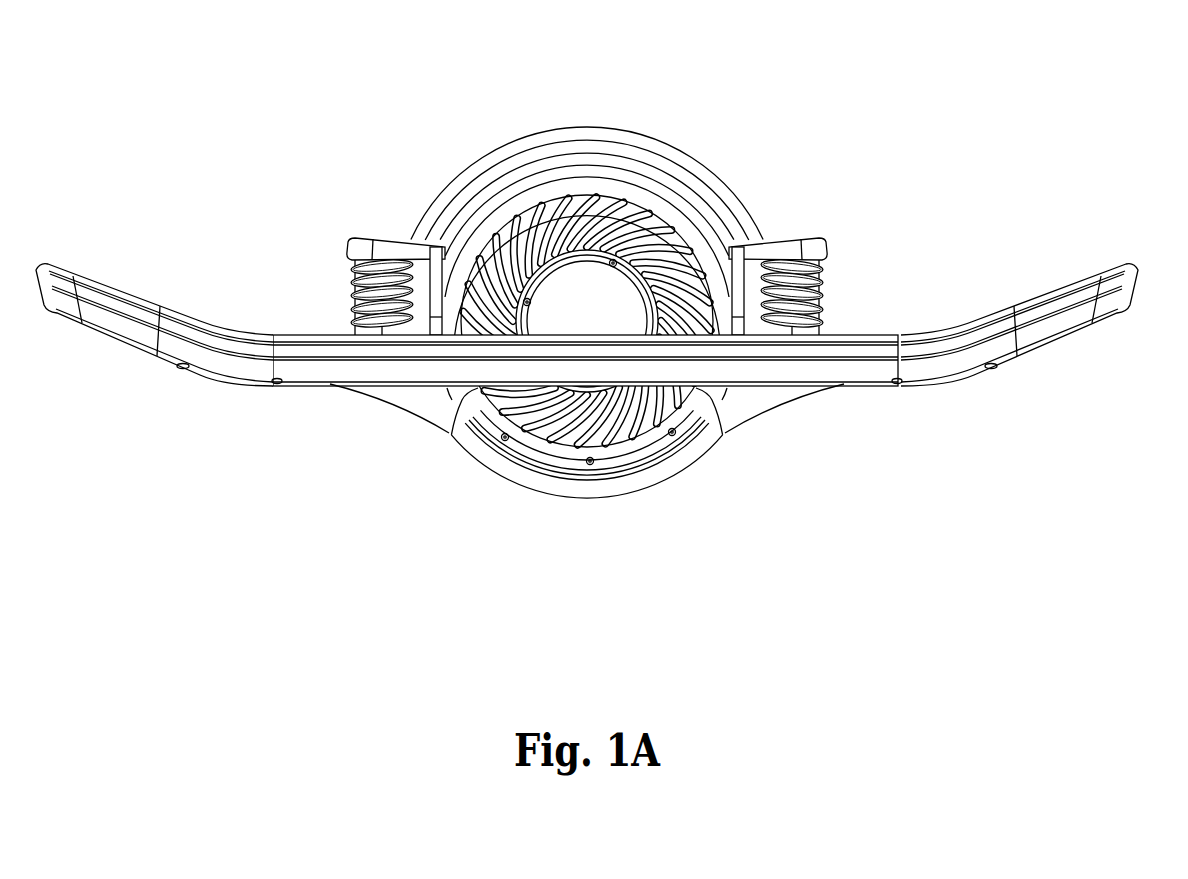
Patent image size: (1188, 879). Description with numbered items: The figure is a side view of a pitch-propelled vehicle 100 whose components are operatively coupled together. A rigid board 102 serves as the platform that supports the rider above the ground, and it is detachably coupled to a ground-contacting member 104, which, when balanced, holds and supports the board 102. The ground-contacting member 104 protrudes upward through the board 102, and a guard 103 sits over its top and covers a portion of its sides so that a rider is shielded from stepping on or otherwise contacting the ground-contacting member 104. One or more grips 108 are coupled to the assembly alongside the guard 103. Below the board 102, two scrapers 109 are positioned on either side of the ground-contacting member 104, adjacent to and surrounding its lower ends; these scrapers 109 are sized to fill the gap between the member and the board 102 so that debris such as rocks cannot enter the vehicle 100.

The pitch-propelled vehicle 100 is at (1048, 73).
The board 102 is at (1037, 307).
The guard 103 is at (710, 208).
The ground-contacting member 104 is at (643, 483).
The grips 108 is at (360, 238).
The scrapers 109 is at (402, 410).